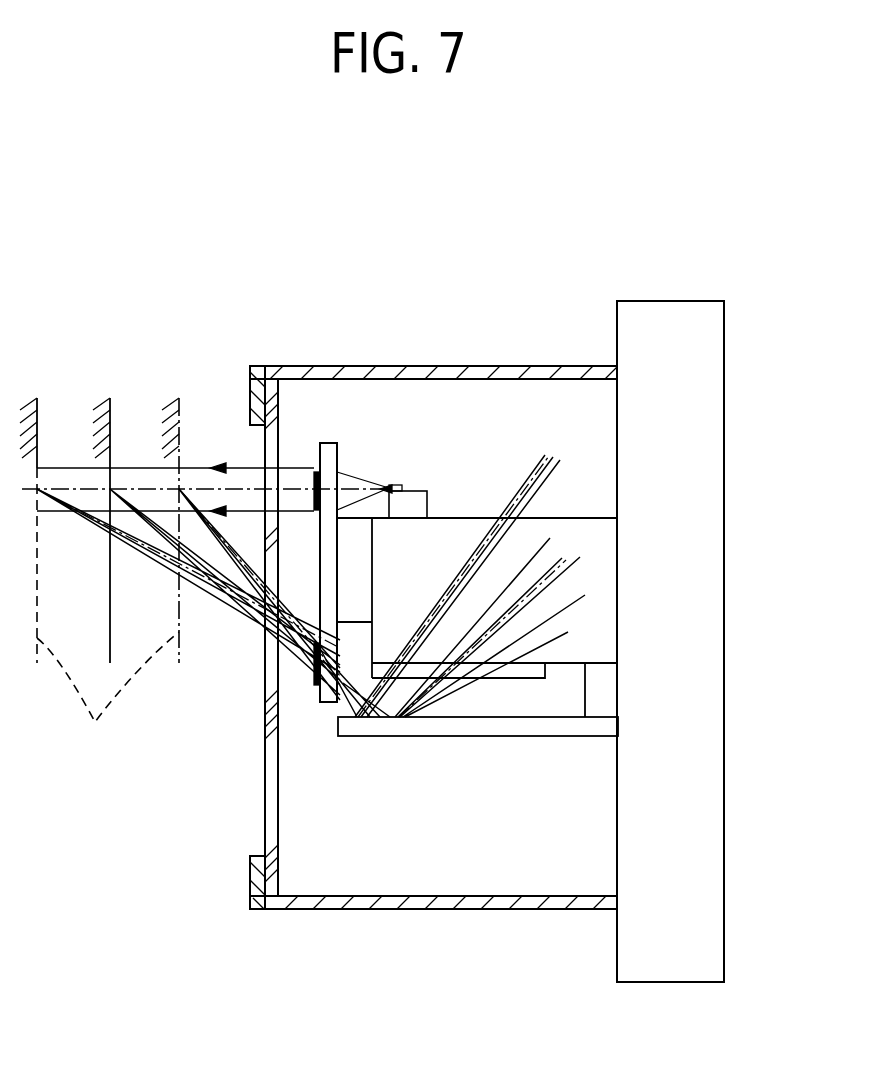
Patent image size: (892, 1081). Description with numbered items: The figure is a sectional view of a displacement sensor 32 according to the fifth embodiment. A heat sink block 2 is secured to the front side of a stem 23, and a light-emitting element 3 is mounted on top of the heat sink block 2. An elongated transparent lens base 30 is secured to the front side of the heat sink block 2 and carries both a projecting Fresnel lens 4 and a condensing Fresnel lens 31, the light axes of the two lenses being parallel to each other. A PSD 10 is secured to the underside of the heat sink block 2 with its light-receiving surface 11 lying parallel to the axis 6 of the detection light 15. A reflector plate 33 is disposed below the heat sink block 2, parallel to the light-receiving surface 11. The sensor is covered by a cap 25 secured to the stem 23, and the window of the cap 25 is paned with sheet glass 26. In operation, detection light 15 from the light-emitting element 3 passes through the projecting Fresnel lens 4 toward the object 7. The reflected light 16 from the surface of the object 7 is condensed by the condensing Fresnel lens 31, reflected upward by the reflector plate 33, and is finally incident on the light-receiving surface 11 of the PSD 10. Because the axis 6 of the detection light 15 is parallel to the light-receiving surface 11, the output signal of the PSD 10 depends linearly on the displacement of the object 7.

The heat sink block 2 is at (470, 532).
The light-emitting element 3 is at (401, 485).
The projecting Fresnel lens 4 is at (316, 480).
The light axis 6 is at (153, 488).
The object 7 is at (110, 645).
The PSD 10 is at (540, 672).
The light-receiving surface 11 is at (490, 680).
The detection light 15 is at (76, 467).
The reflected light 16 is at (253, 590).
The stem 23 is at (713, 672).
The cap 25 is at (297, 372).
The sheet glass 26 is at (268, 820).
The transparent lens base 30 is at (330, 453).
The condensing Fresnel lens 31 is at (313, 675).
The displacement sensor 32 is at (512, 357).
The reflector plate 33 is at (408, 728).